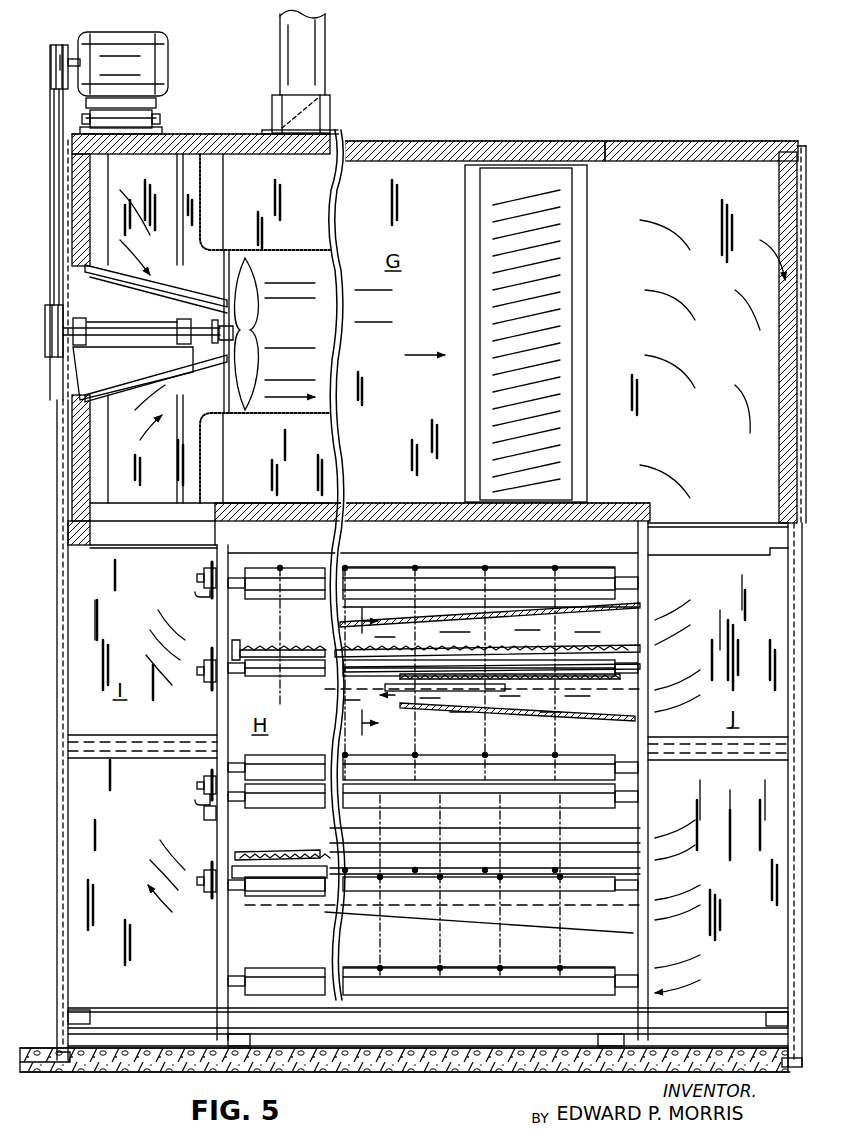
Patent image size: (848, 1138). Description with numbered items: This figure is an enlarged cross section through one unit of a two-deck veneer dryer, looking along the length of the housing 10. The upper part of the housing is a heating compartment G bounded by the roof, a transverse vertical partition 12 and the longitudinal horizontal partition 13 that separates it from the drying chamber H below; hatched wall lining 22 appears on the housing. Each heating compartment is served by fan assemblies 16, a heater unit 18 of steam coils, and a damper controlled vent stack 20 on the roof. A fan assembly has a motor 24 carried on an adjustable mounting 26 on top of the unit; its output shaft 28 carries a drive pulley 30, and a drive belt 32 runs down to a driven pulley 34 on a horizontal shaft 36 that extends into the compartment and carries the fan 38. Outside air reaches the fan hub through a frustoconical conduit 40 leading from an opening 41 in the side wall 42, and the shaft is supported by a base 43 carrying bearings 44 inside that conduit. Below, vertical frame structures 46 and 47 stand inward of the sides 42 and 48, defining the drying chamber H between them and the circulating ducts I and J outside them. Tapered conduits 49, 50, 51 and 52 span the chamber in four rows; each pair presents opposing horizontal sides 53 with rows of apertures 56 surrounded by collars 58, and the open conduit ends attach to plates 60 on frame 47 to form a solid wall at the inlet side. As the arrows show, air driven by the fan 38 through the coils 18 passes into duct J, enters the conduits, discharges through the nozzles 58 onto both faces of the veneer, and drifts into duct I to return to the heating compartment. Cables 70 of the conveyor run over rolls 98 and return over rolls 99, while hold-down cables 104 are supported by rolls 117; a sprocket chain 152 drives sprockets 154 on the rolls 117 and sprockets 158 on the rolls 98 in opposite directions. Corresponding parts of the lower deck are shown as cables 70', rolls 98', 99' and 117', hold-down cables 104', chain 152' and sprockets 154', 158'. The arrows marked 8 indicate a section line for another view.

The section line indicator 8- 8 is at (380, 667).
The housing 10 is at (500, 140).
The transverse vertical partitions 12 is at (628, 163).
The horizontal partition 13 is at (600, 530).
The fan assemblies 16 is at (168, 55).
The heater unit 18 is at (530, 425).
The damper controlled vent stack 20 is at (325, 68).
The insulation 22 is at (80, 195).
The motor 24 is at (110, 35).
The adjustable support means 26 is at (155, 118).
The output shaft 28 is at (72, 57).
The drive pulley 30 is at (48, 52).
The drive belt 32 is at (50, 128).
The driven pulley 34 is at (44, 322).
The horizontal shaft 36 is at (146, 328).
The fan 38 is at (255, 332).
The frustoconical conduit 40 is at (135, 283).
The opening 41 is at (75, 392).
The side wall 42 is at (62, 475).
The base 43 is at (135, 400).
The bearings 44 is at (184, 319).
The frame structure 46 is at (216, 720).
The frame structure 47 is at (640, 728).
The side 48 is at (790, 660).
The conduit means 49 is at (635, 608).
The conduit means 50 is at (555, 712).
The conduit means 51 is at (372, 843).
The conduit means 52 is at (598, 925).
The horizontal sides 53 is at (615, 665).
The apertures 56 is at (495, 656).
The collars 58 is at (435, 682).
The plates 60 is at (638, 662).
The wire cables 70 is at (433, 688).
The conveyor roller 70' is at (433, 924).
The rolls 98 is at (507, 716).
The roller 98' is at (279, 897).
The support rolls 99 is at (433, 863).
The bottom roller 99' is at (479, 958).
The cables 104 is at (418, 666).
The roller shaft 104' is at (470, 885).
The rolls 117 is at (490, 580).
The idler roller 117' is at (442, 851).
The driving sprocket chain 152 is at (193, 573).
The mounting bracket 152' is at (182, 780).
The sprockets 154 is at (191, 604).
The support arm 154' is at (182, 804).
The drive sprockets 158 is at (190, 678).
The bearing mount 158' is at (185, 895).